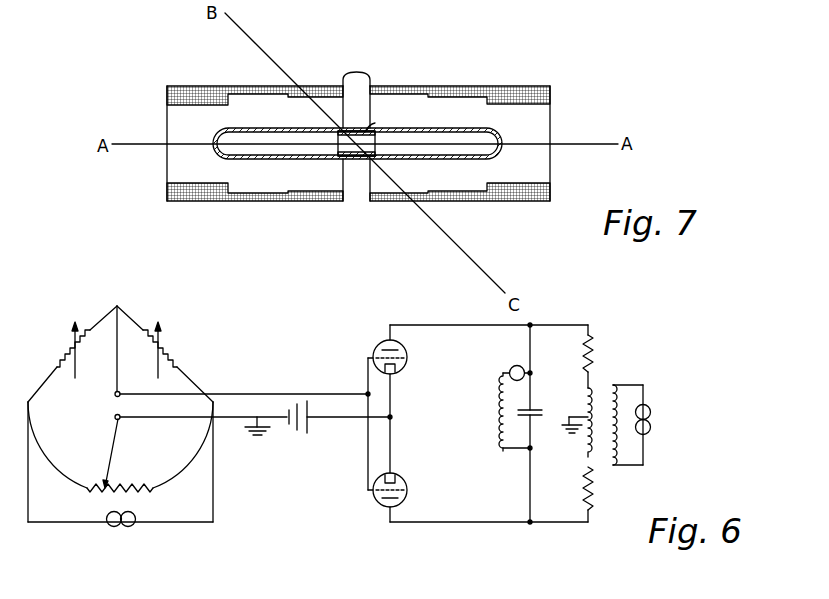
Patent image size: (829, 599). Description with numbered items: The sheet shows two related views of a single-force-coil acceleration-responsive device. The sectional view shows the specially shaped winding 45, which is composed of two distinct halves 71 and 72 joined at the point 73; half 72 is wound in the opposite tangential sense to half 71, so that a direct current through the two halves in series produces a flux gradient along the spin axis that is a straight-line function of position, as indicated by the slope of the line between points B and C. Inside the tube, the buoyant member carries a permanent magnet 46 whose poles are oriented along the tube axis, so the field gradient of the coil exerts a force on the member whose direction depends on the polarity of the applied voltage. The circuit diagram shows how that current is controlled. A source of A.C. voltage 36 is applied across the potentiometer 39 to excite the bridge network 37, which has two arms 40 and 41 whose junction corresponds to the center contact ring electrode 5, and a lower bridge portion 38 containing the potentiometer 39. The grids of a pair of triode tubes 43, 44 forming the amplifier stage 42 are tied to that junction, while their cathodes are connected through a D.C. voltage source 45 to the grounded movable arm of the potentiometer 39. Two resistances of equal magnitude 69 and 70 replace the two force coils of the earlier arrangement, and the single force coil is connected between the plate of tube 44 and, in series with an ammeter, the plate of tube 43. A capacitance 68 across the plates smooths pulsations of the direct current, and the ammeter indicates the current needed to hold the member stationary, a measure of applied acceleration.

In FIG. 6, the center contact ring electrode 5 is at (118, 306).
In FIG. 6, the source of A.C. voltage 36 is at (117, 527).
In FIG. 6, the bridge circuit 37 is at (104, 321).
In FIG. 6, the bridge arm 38 is at (71, 491).
In FIG. 6, the potentiometer 39 is at (153, 493).
In FIG. 6, the bridge arm 40 is at (63, 343).
In FIG. 6, the bridge arm 41 is at (167, 340).
In FIG. 6, the amplifier 42 is at (364, 467).
In FIG. 6, the triode tube 43 is at (409, 366).
In FIG. 6, the triode tube 44 is at (405, 501).
In FIG. 7, the D.C. voltage source 45 is at (370, 86).
In FIG. 6, the D.C. voltage source 45 is at (287, 433).
In FIG. 7, the permanent magnet 46 is at (342, 159).
In FIG. 6, the capacitance 68 is at (543, 410).
In FIG. 6, the resistance 69 is at (602, 353).
In FIG. 6, the resistance 70 is at (593, 503).
In FIG. 7, the coil half 71 is at (222, 201).
In FIG. 7, the coil half 72 is at (513, 201).
In FIG. 7, the junction point 73 is at (357, 78).